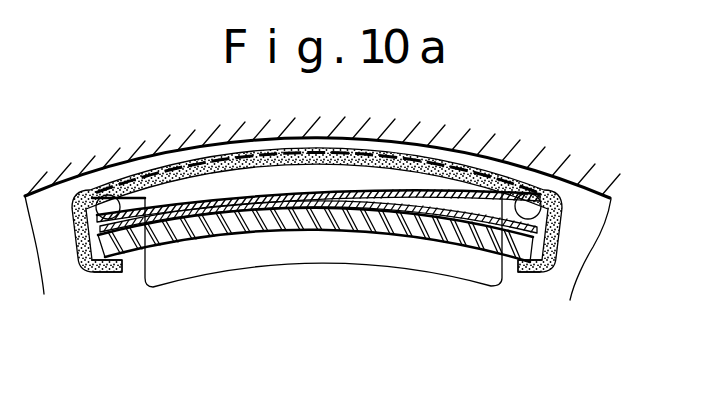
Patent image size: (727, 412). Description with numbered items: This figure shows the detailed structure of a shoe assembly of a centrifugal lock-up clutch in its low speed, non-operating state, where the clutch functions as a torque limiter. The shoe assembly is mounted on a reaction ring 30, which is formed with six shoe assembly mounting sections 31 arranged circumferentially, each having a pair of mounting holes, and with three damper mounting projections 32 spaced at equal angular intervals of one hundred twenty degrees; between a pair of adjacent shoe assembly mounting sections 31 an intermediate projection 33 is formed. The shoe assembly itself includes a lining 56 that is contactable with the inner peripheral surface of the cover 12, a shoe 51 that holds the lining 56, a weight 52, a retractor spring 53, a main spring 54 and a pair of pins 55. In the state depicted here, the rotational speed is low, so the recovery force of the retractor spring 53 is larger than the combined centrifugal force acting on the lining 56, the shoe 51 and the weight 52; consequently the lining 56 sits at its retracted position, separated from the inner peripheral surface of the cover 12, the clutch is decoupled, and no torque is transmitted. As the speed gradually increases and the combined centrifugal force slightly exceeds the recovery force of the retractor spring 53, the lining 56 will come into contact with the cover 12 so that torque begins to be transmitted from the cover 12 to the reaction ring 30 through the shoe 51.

The cover 12 is at (538, 163).
The reaction ring 30 is at (135, 278).
The shoe assembly mounting section 31 is at (297, 248).
The damper mounting projection 32 is at (68, 278).
The intermediate projection 33 is at (532, 282).
The shoe 51 is at (105, 282).
The weight 52 is at (192, 233).
The retractor spring 53 is at (457, 212).
The main spring 54 is at (275, 192).
The pin 55 is at (78, 222).
The lining 56 is at (170, 165).